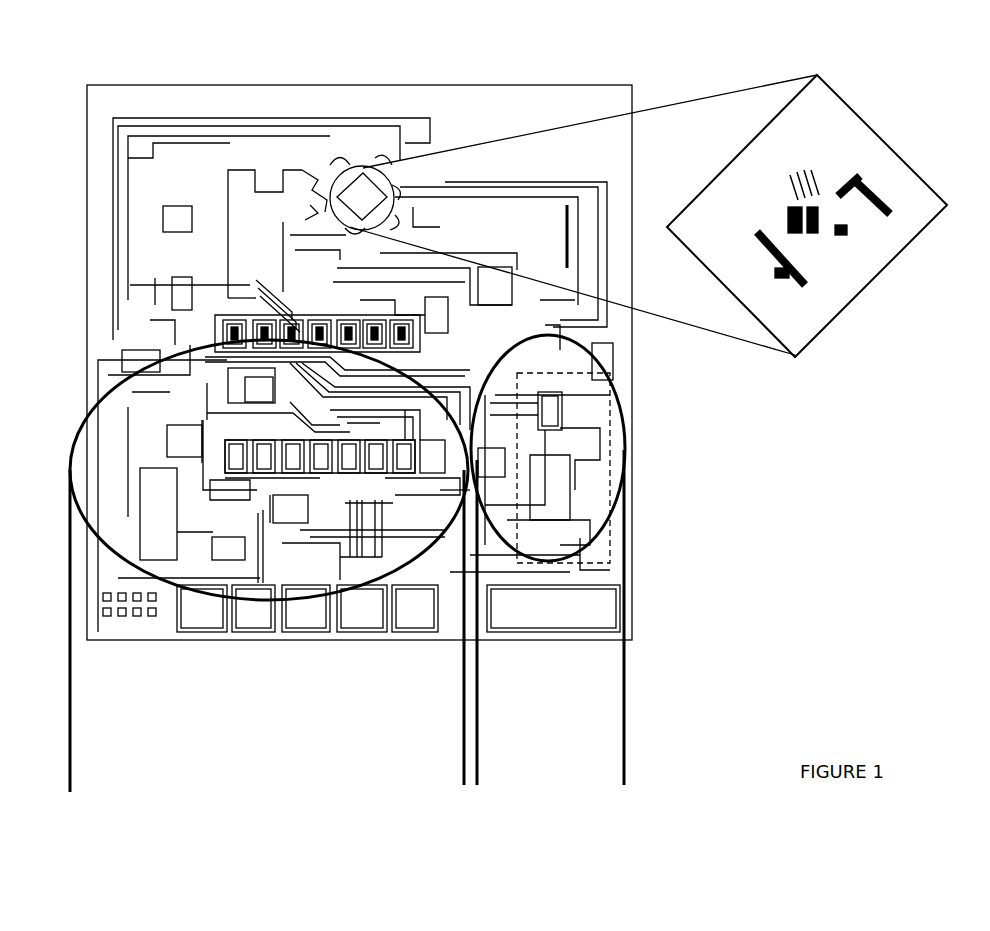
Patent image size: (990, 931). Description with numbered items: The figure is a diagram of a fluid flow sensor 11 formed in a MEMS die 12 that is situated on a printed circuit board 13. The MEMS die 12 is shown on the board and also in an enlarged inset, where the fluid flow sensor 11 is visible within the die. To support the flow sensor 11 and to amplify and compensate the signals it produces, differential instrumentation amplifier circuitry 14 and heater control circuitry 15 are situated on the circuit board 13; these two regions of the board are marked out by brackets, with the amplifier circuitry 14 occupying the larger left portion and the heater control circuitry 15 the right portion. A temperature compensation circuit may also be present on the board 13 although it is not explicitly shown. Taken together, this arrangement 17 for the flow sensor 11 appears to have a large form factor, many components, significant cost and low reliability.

The fluid flow sensor 11 is at (807, 207).
The MEMS die 12 is at (360, 198).
The printed circuit board 13 is at (615, 85).
The differential instrumentation amplifier circuitry 14 is at (463, 793).
The heater control circuitry 15 is at (623, 793).
The arrangement 17 is at (657, 498).